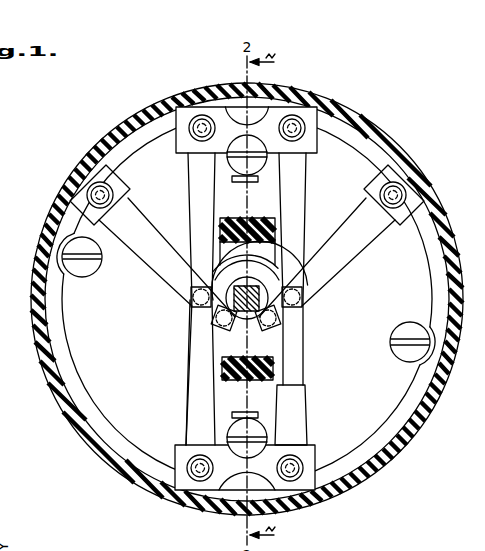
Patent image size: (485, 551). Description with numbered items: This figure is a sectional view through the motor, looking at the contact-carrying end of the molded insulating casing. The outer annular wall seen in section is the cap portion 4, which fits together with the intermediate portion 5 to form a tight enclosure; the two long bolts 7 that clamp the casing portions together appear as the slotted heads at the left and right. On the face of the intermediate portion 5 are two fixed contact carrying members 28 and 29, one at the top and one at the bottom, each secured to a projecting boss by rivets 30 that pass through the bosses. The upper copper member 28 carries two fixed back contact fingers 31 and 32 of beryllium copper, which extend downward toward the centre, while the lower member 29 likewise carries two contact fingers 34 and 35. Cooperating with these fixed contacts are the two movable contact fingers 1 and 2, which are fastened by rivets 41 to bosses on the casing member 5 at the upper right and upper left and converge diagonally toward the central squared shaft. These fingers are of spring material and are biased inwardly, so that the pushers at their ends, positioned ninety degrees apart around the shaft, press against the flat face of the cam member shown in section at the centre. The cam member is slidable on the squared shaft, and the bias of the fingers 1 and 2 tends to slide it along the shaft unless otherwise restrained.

The movable contact finger 1 is at (337, 268).
The movable contact finger 2 is at (144, 261).
The cap portion 4 is at (438, 397).
The intermediate portion 5 is at (275, 364).
The long bolt 7 is at (62, 254).
The fixed contact carrying member 28 is at (296, 116).
The fixed contact carrying member 29 is at (294, 480).
The rivet 30 is at (281, 121).
The fixed back contact finger 31 is at (303, 198).
The fixed back contact finger 32 is at (188, 195).
The contact finger 34 is at (307, 409).
The contact finger 35 is at (186, 404).
The rivet 41 is at (89, 188).